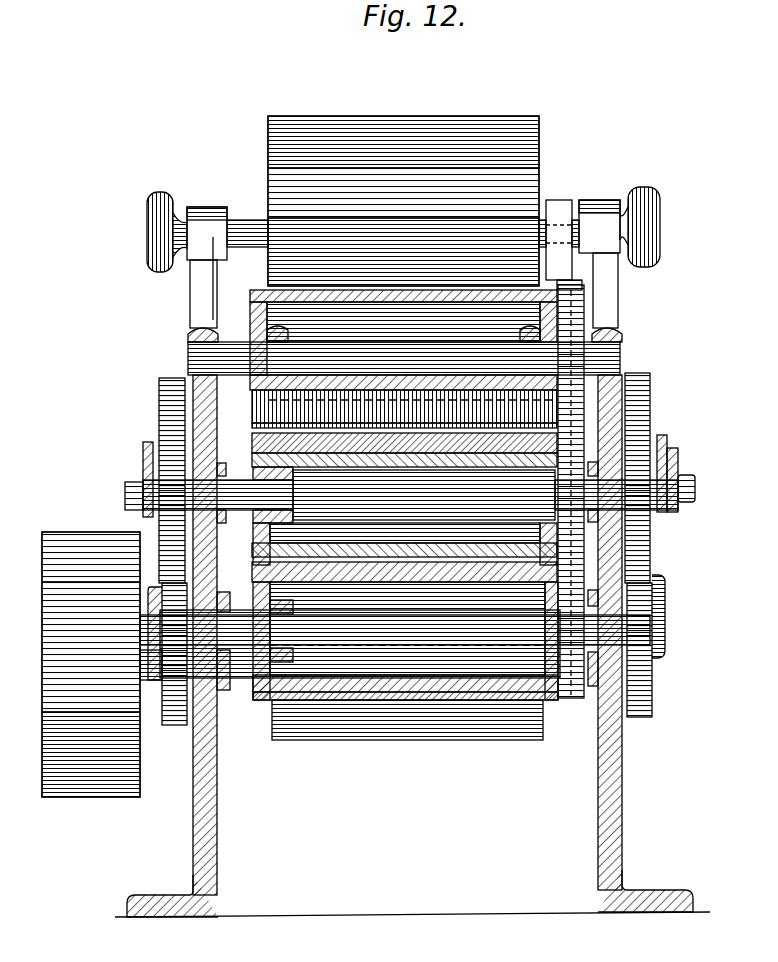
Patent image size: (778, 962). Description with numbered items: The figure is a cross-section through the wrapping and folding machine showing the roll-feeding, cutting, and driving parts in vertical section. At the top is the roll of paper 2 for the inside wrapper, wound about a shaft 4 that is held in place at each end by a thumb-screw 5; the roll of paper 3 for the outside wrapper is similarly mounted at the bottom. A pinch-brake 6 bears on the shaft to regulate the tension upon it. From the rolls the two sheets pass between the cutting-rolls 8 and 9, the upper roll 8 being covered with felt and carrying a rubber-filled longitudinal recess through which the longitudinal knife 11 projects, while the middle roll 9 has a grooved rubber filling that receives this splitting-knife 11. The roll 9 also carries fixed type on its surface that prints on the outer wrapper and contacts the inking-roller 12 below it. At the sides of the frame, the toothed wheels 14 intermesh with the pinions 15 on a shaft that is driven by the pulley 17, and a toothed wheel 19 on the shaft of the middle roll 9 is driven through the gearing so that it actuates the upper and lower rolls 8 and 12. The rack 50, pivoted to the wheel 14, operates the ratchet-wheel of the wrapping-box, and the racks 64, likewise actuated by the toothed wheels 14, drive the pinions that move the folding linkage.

The roll of paper for the inside wrapper 2 is at (403, 201).
The roll of paper for the outside wrapper 3 is at (412, 722).
The shaft 4 is at (245, 228).
The thumb-screw 5 is at (158, 212).
The pinch-brake 6 is at (557, 206).
The cutting-roll 8 is at (403, 340).
The cutting-roll 9 is at (401, 524).
The longitudinal knife 11 is at (290, 412).
The inking-roller 12 is at (405, 641).
The toothed wheel 14 is at (170, 378).
The pinion 15 is at (175, 708).
The pulley 17 is at (102, 664).
The toothed wheel 19 is at (572, 462).
The rack 50 is at (681, 464).
The rack 64 is at (143, 455).